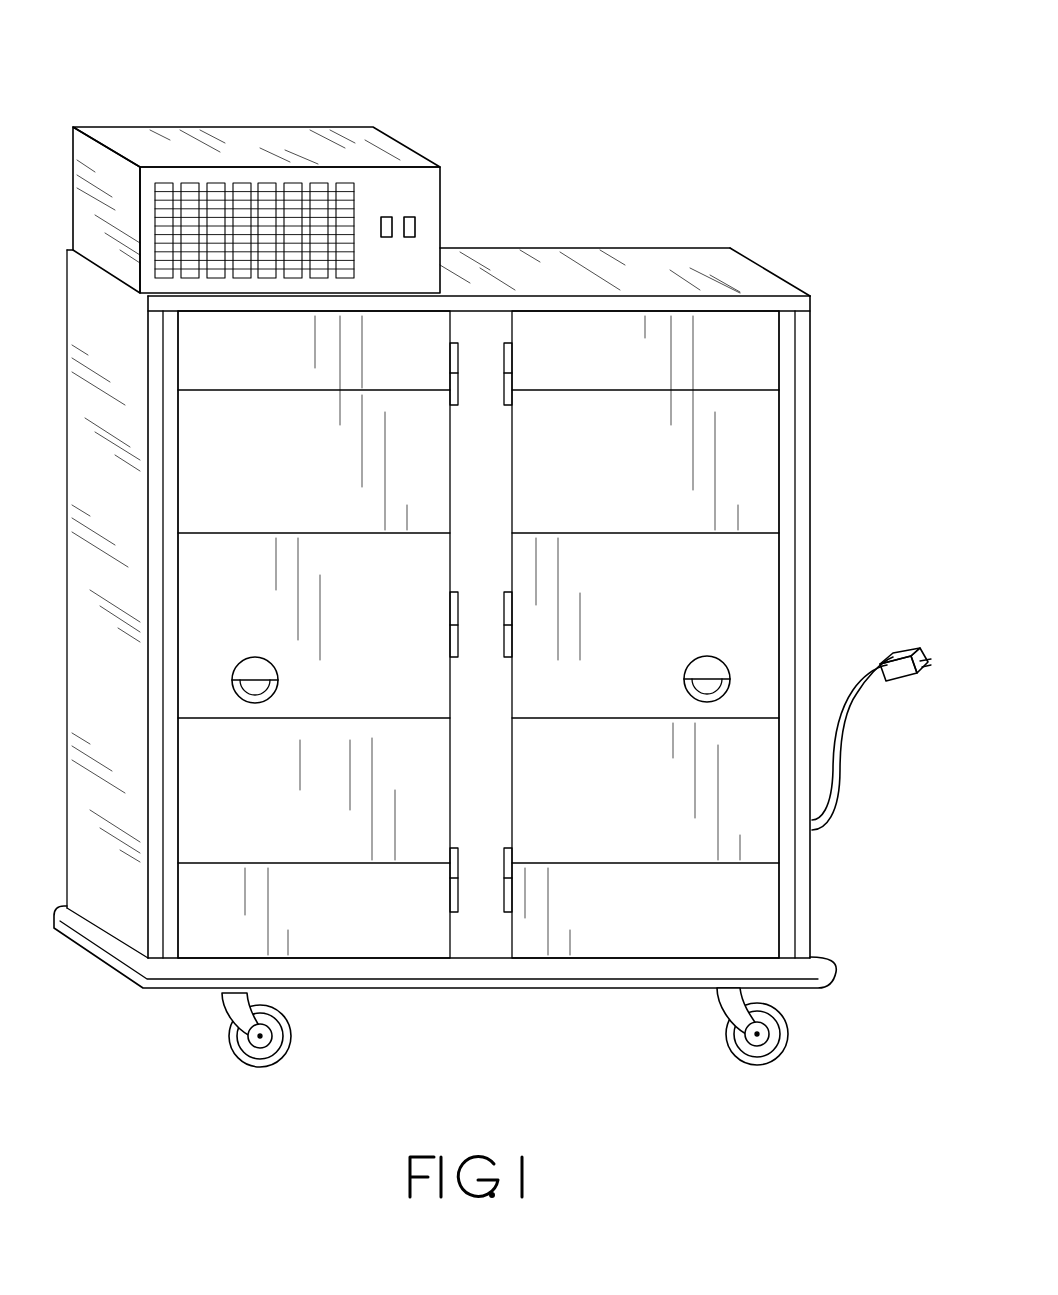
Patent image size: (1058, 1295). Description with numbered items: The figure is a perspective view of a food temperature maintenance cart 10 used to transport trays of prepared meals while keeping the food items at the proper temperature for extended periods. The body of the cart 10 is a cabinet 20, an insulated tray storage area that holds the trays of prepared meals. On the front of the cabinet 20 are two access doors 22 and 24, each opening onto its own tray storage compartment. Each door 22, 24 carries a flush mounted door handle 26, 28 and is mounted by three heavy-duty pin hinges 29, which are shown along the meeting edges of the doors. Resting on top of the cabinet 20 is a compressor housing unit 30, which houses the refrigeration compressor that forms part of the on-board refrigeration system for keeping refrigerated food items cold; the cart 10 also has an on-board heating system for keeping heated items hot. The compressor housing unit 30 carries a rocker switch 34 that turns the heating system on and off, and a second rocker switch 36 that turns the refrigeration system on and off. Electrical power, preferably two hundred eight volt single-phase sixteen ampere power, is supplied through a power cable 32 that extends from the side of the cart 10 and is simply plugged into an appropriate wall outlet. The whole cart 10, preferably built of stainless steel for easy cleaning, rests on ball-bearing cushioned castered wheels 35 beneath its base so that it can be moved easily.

The food temperature maintenance cart 10 is at (618, 133).
The cabinet 20 is at (660, 247).
The access door 22 is at (618, 467).
The access door 24 is at (283, 473).
The door handle 26 is at (713, 653).
The door handle 28 is at (268, 658).
The pin hinges 29 is at (504, 405).
The compressor housing unit 30 is at (222, 127).
The power cable 32 is at (843, 750).
The rocker switch 34 is at (387, 217).
The castered wheels 35 is at (293, 1040).
The second rocker switch 36 is at (415, 228).